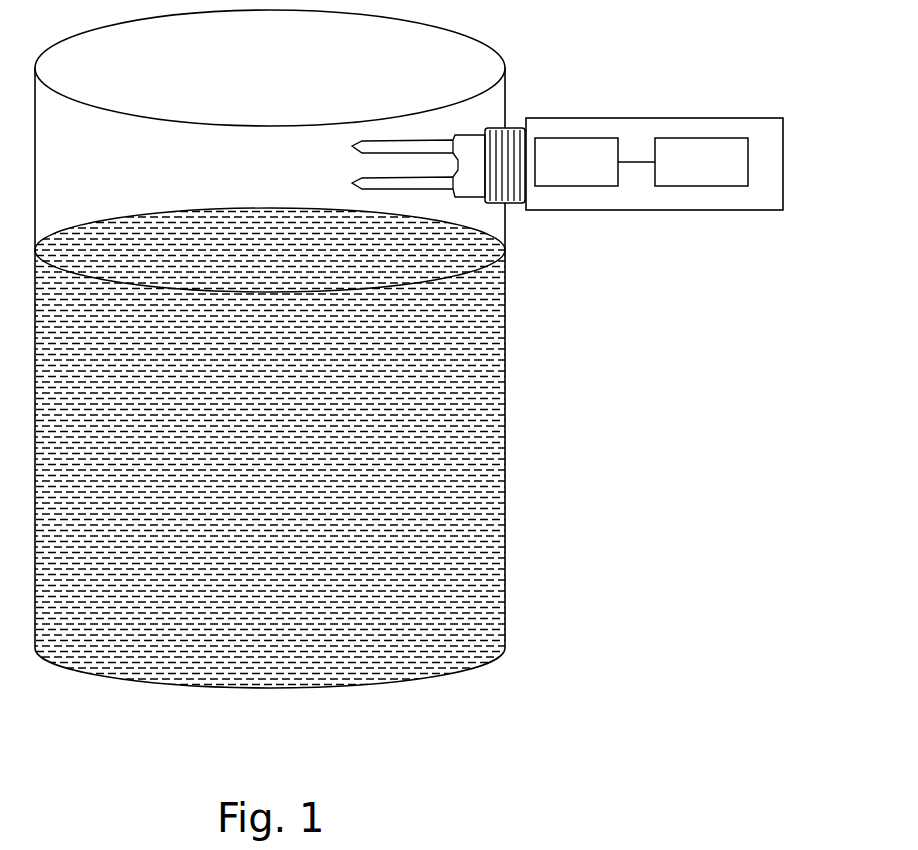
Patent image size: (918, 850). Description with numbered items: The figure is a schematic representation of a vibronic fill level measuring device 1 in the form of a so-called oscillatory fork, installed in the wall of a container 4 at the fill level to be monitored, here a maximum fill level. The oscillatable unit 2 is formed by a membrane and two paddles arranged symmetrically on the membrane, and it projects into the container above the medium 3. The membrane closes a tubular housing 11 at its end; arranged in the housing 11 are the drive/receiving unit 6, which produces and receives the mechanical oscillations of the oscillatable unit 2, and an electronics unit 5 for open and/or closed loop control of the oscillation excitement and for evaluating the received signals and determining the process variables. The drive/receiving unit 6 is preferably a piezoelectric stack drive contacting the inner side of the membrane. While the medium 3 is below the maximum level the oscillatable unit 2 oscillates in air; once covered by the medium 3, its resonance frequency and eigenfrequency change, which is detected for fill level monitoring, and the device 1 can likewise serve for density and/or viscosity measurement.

The vibronic fill level measuring device 1 is at (565, 181).
The oscillatable unit 2 is at (416, 122).
The medium 3 is at (478, 510).
The container 4 is at (506, 423).
The electronics unit 5 is at (715, 178).
The drive/receiving unit 6 is at (579, 178).
The tubular housing 11 is at (654, 128).